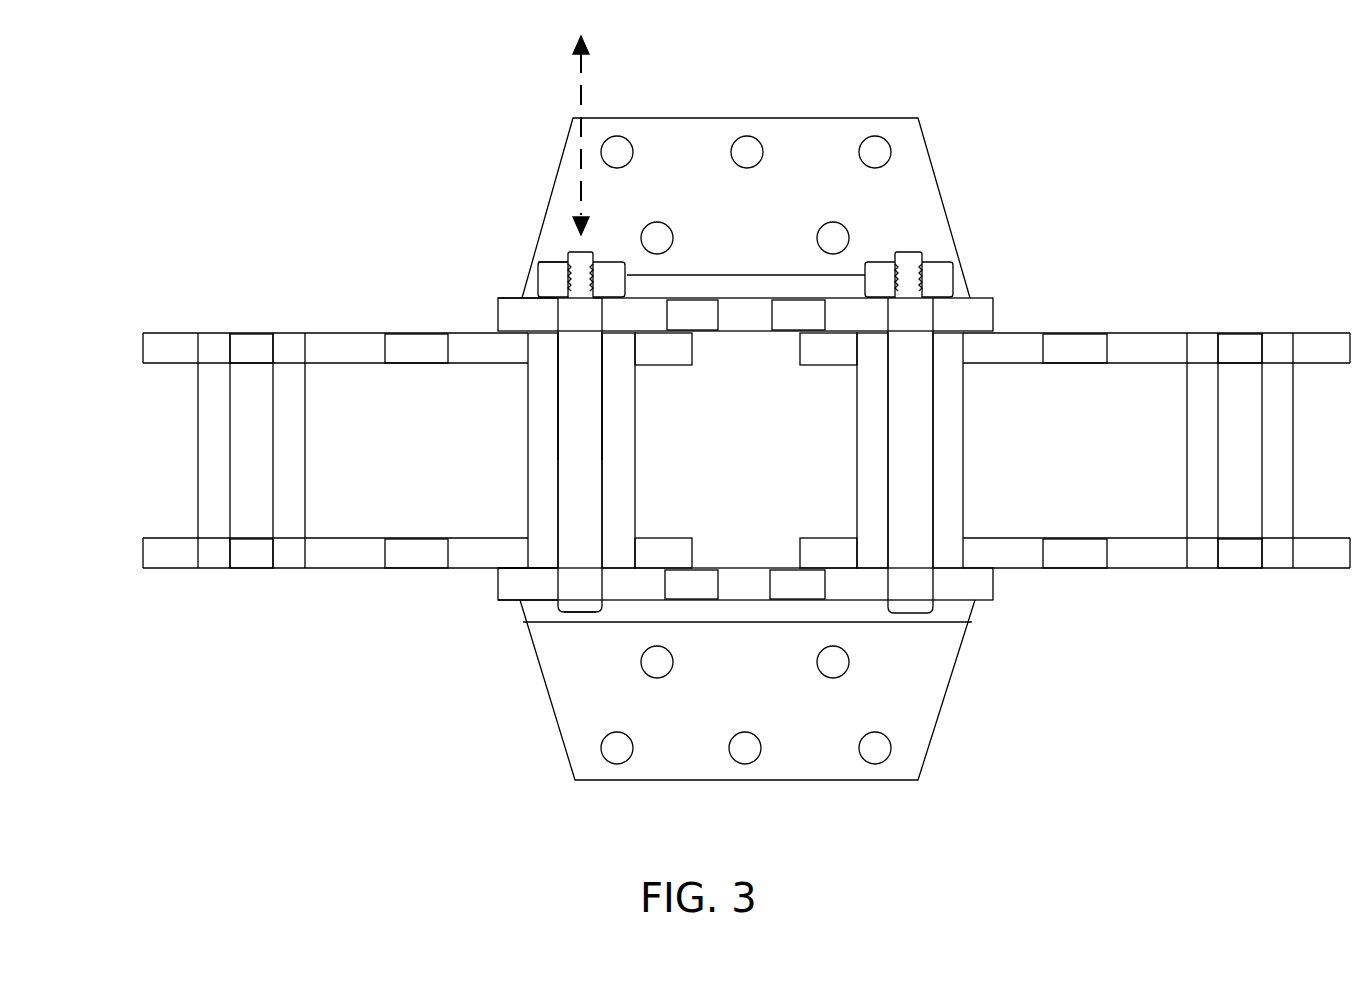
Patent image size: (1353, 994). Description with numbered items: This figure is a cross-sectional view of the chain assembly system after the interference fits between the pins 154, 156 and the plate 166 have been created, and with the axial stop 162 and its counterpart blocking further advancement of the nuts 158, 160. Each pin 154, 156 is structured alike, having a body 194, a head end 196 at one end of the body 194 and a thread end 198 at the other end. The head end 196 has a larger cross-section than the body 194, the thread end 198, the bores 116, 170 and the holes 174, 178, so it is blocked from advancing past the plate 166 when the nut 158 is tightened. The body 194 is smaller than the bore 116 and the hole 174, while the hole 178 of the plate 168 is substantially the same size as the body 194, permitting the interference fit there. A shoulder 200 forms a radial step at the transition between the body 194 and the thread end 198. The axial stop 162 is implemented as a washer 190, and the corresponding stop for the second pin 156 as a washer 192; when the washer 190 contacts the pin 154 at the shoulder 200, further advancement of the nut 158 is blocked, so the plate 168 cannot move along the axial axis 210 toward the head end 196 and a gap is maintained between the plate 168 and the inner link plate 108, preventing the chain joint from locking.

The plate 108 is at (332, 352).
The bore 116 is at (618, 445).
The pin 154 is at (587, 458).
The pin 156 is at (913, 430).
The nut 158 is at (558, 285).
The nut 160 is at (943, 272).
The axial stop 162 is at (522, 263).
The plate 166 is at (960, 578).
The plate 168 is at (963, 310).
The bore 170 is at (548, 607).
The hole 174 is at (555, 580).
The hole 178 is at (604, 321).
The washer 190 is at (553, 297).
The washer 192 is at (940, 298).
The body 194 is at (583, 377).
The head end 196 is at (578, 606).
The thread end 198 is at (582, 267).
The shoulder 200 is at (597, 298).
The axial axis 210 is at (577, 156).